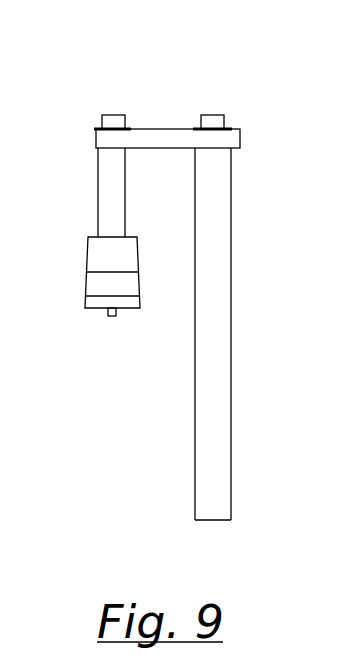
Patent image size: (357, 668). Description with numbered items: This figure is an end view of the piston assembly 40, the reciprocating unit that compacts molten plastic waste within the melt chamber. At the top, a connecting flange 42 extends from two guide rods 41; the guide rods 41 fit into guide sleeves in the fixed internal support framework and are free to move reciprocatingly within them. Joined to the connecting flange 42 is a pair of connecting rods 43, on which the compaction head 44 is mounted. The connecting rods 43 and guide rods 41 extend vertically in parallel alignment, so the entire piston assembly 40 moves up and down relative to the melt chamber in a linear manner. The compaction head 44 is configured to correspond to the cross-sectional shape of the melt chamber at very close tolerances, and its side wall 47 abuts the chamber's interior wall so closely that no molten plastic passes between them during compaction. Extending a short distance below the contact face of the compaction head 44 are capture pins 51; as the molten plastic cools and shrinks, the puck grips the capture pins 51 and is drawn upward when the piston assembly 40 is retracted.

The piston assembly 40 is at (181, 59).
The guide rods 41 is at (214, 304).
The connecting flange 42 is at (162, 137).
The connecting rods 43 is at (112, 190).
The compaction head 44 is at (112, 250).
The side wall 47 is at (110, 300).
The capture pins 51 is at (112, 318).